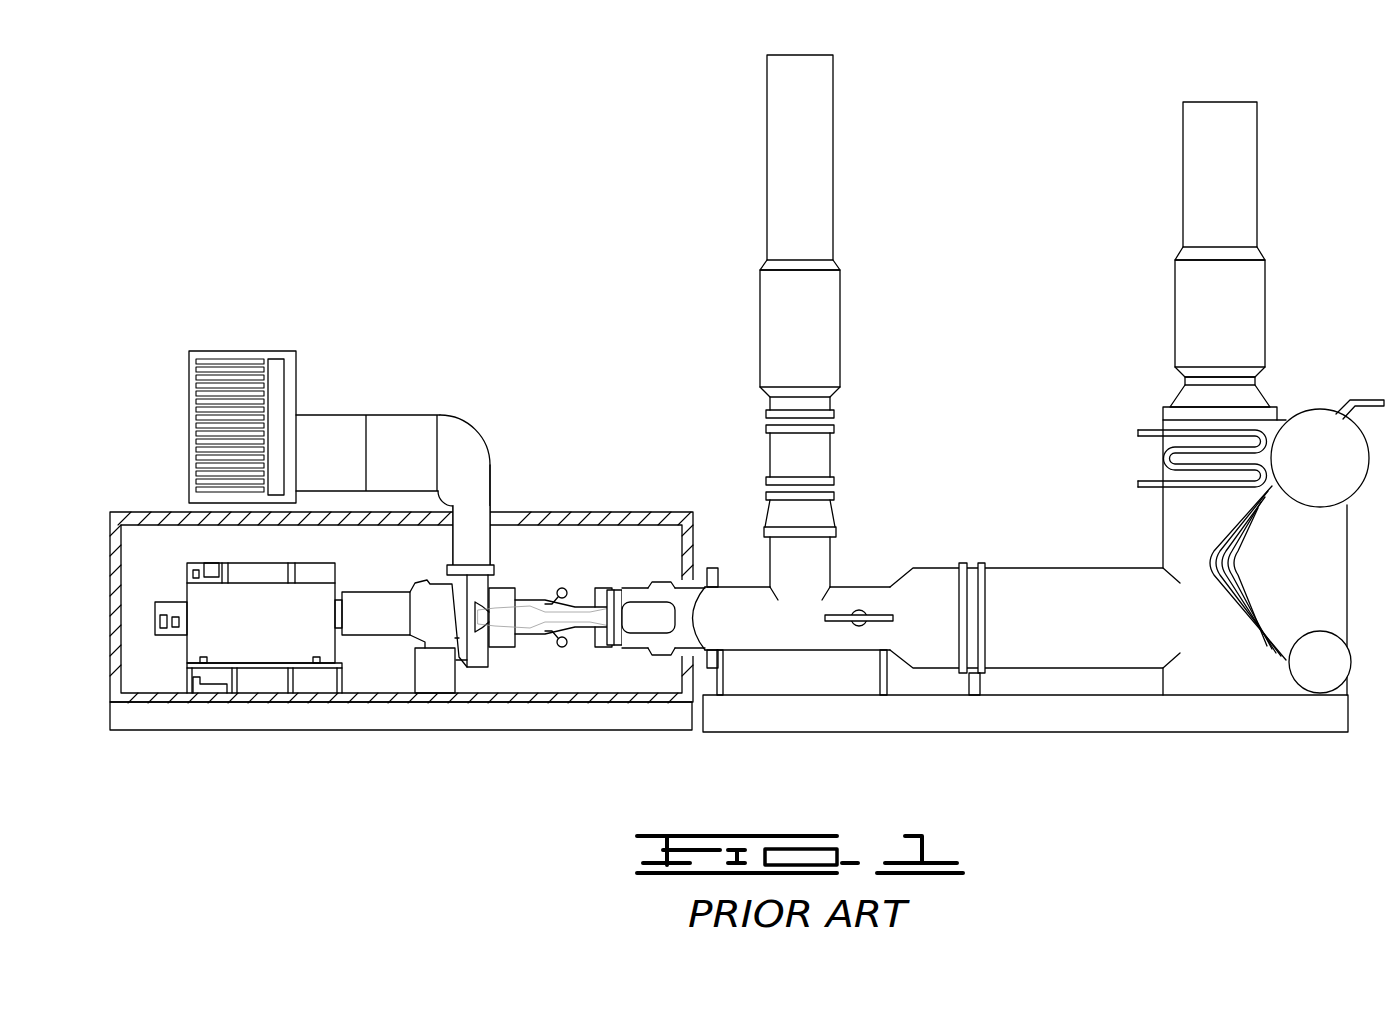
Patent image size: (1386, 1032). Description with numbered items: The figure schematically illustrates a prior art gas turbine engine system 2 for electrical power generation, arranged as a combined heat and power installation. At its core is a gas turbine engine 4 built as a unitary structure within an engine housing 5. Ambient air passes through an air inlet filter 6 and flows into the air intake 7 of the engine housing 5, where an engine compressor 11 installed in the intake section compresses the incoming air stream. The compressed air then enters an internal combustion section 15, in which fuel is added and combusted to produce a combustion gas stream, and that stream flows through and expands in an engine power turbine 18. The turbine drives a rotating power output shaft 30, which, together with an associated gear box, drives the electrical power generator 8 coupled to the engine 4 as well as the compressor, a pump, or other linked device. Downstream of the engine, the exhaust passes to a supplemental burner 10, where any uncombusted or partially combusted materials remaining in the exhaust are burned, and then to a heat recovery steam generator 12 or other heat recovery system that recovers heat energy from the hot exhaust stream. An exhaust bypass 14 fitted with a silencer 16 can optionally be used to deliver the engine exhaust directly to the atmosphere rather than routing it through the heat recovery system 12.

The gas turbine engine system 2 is at (440, 210).
The gas turbine engine 4 is at (600, 600).
The engine housing 5 is at (620, 600).
The air inlet filter 6 is at (242, 351).
The air intake 7 is at (478, 668).
The electrical power generator 8 is at (278, 636).
The supplemental burner 10 is at (986, 568).
The engine compressor 11 is at (533, 600).
The heat recovery steam generator 12 is at (1138, 430).
The exhaust bypass 14 is at (834, 145).
The internal combustion section 15 is at (572, 645).
The silencer 16 is at (840, 318).
The engine power turbine 18 is at (613, 648).
The rotating power output shaft 30 is at (572, 605).